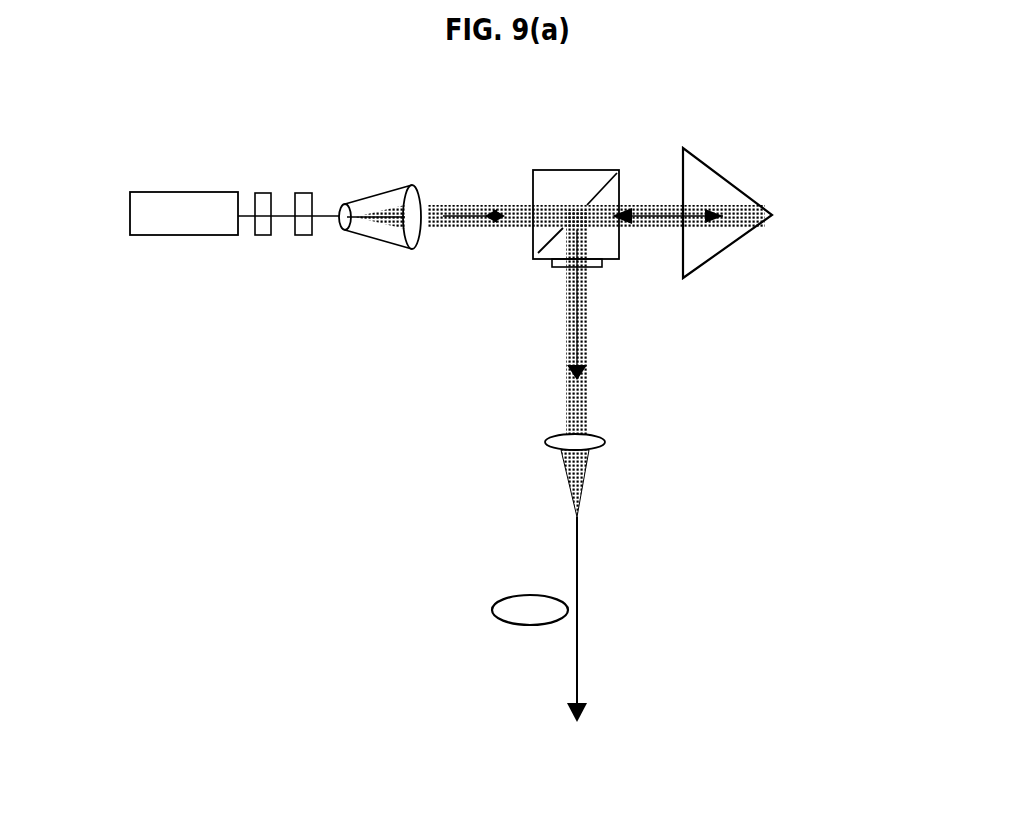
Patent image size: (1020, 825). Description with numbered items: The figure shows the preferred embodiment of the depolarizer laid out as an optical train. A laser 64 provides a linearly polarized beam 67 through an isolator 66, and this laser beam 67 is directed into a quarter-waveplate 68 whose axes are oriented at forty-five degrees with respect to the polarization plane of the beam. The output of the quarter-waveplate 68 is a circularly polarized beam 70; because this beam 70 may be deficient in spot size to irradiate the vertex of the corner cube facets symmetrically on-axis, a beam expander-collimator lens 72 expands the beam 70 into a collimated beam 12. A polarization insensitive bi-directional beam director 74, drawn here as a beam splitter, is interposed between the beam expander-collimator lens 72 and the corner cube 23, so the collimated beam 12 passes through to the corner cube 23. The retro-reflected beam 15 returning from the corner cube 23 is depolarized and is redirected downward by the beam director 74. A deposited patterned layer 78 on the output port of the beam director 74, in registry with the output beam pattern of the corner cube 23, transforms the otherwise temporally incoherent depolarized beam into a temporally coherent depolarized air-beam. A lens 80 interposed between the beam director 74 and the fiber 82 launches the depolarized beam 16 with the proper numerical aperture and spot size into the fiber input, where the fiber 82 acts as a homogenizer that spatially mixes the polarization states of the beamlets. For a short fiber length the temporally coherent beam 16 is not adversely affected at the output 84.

The laser 64 is at (130, 218).
The isolator 66 is at (265, 237).
The linearly polarized beam 67 is at (280, 213).
The quarter-waveplate 68 is at (303, 237).
The circularly polarized beam 70 is at (323, 213).
The beam expander-collimator lens 72 is at (382, 187).
The collimated beam 12 is at (473, 208).
The polarization insensitive bi-directional beam director 74 is at (567, 170).
The deposited patterned layer 78 is at (560, 267).
The retro-reflected beam 15 is at (648, 205).
The corner cube 23 is at (727, 247).
The depolarized beam 16 is at (587, 345).
The lens 80 is at (545, 445).
The fiber 82 is at (577, 593).
The output 84 is at (583, 710).